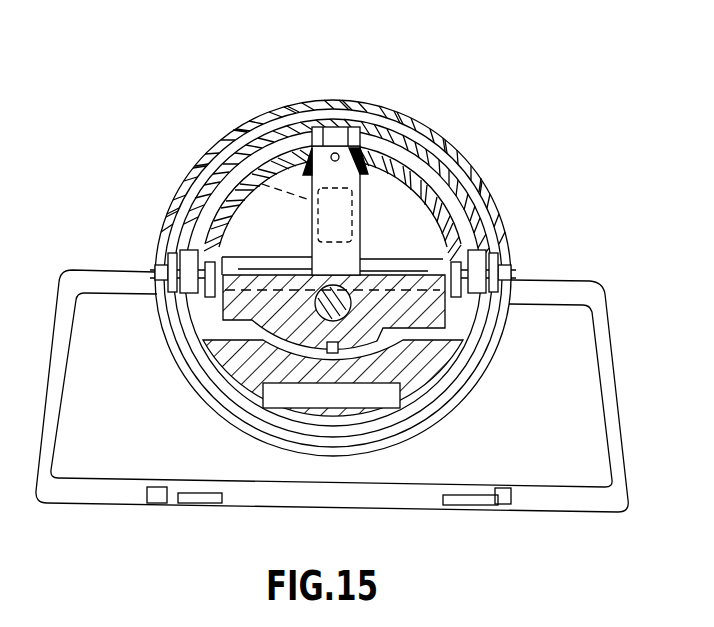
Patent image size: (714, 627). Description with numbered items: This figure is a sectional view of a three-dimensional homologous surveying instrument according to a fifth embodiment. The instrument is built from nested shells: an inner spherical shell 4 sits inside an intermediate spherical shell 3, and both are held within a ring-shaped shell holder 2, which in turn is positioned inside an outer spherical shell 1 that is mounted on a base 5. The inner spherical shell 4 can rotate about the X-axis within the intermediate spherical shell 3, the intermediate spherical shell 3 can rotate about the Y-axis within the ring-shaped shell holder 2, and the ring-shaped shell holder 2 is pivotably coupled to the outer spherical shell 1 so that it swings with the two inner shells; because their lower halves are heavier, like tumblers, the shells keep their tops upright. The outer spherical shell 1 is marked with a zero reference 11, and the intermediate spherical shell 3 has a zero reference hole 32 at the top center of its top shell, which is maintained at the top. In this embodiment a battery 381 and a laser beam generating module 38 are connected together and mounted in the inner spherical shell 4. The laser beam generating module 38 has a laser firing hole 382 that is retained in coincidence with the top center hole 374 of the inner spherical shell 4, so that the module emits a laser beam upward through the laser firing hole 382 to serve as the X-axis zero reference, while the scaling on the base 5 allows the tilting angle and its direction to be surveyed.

The outer spherical shell 1 is at (440, 121).
The ring-shaped shell holder 2 is at (508, 249).
The intermediate spherical shell 3 is at (456, 182).
The inner spherical shell 4 is at (452, 228).
The base 5 is at (583, 283).
The zero reference 11 is at (341, 104).
The zero reference hole 32 is at (332, 127).
The laser beam generating module 38 is at (448, 154).
The top center hole 374 is at (293, 128).
The battery 381 is at (196, 154).
The laser firing hole 382 is at (368, 120).